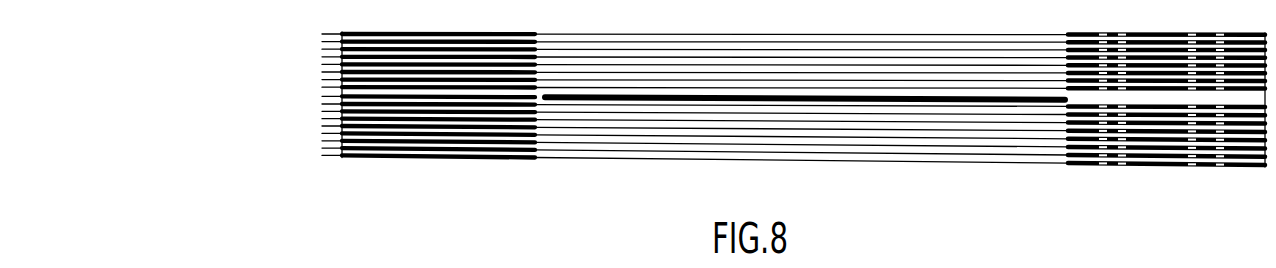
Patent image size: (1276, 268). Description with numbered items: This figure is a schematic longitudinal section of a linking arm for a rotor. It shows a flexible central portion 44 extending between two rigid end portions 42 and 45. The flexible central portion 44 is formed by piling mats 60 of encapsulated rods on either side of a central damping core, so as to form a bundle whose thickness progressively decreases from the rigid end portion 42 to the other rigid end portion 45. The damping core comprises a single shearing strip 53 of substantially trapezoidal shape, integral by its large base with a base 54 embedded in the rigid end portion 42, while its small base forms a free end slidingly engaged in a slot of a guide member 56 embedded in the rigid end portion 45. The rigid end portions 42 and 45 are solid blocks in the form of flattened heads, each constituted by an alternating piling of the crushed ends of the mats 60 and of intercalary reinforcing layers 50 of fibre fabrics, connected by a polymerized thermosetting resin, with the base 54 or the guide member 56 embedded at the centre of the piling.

The rigid end portion 42 is at (1178, 152).
The flexible central portion 44 is at (653, 162).
The rigid end portion 45 is at (395, 157).
The intercalary reinforcing layers 50 is at (322, 137).
The shearing strip 53 is at (968, 107).
The base 54 is at (1138, 102).
The guide member 56 is at (462, 95).
The mats 60 is at (850, 122).